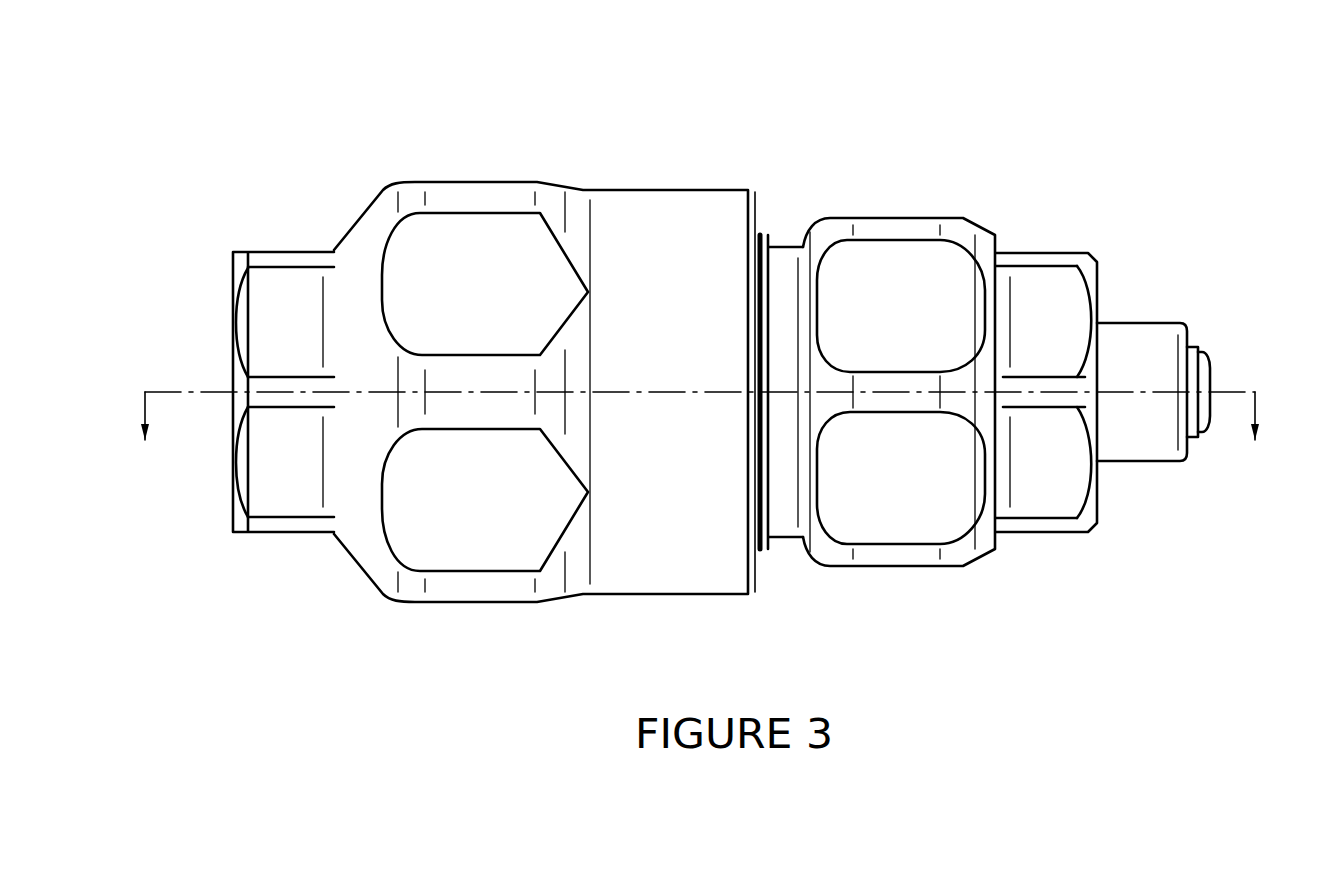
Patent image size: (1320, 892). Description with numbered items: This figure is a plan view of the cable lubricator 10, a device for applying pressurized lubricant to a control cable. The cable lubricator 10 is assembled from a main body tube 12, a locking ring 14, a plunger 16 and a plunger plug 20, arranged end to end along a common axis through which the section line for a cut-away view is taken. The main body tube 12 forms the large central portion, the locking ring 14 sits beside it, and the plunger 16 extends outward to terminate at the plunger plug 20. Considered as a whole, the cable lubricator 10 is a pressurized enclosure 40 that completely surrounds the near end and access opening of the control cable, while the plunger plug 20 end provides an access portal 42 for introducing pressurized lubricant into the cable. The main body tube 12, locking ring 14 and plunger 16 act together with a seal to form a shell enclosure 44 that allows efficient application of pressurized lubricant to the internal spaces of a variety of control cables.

The cable lubricator 10 is at (707, 341).
The pressurized enclosure 40 is at (707, 341).
The shell enclosure 44 is at (707, 341).
The main body tube 12 is at (873, 520).
The locking ring 14 is at (463, 528).
The plunger 16 is at (1118, 440).
The plunger plug 20 is at (1230, 346).
The access portal 42 is at (1205, 373).